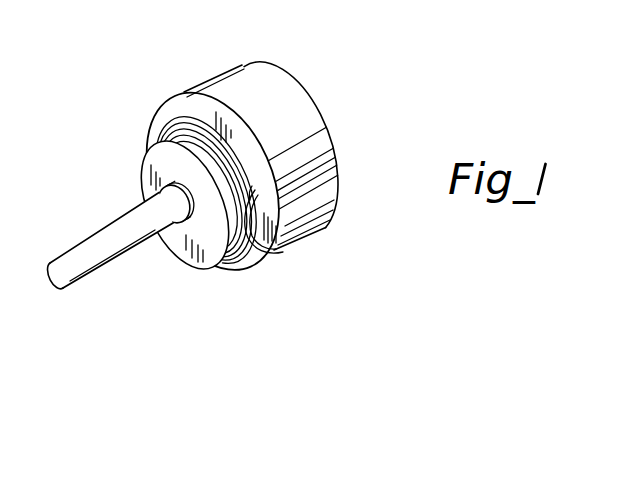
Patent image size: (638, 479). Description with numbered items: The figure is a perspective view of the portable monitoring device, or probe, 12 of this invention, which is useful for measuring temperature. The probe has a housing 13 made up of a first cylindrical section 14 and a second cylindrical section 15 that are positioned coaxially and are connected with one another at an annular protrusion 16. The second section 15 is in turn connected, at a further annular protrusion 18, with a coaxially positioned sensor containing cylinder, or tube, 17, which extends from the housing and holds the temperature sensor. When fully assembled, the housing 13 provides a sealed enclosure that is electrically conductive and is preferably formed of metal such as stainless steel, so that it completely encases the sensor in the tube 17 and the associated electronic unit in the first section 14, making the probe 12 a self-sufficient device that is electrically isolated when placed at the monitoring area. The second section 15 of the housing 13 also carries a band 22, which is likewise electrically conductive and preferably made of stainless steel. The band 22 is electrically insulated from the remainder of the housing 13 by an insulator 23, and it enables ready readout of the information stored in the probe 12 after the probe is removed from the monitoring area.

The monitoring device 12 is at (133, 79).
The housing 13 is at (267, 67).
The first cylindrical section 14 is at (202, 90).
The second cylindrical section 15 is at (148, 148).
The annular protrusion 16 is at (165, 112).
The sensor containing cylinder 17 is at (97, 270).
The annular protrusion 18 is at (133, 209).
The band 22 is at (262, 252).
The insulator 23 is at (256, 193).